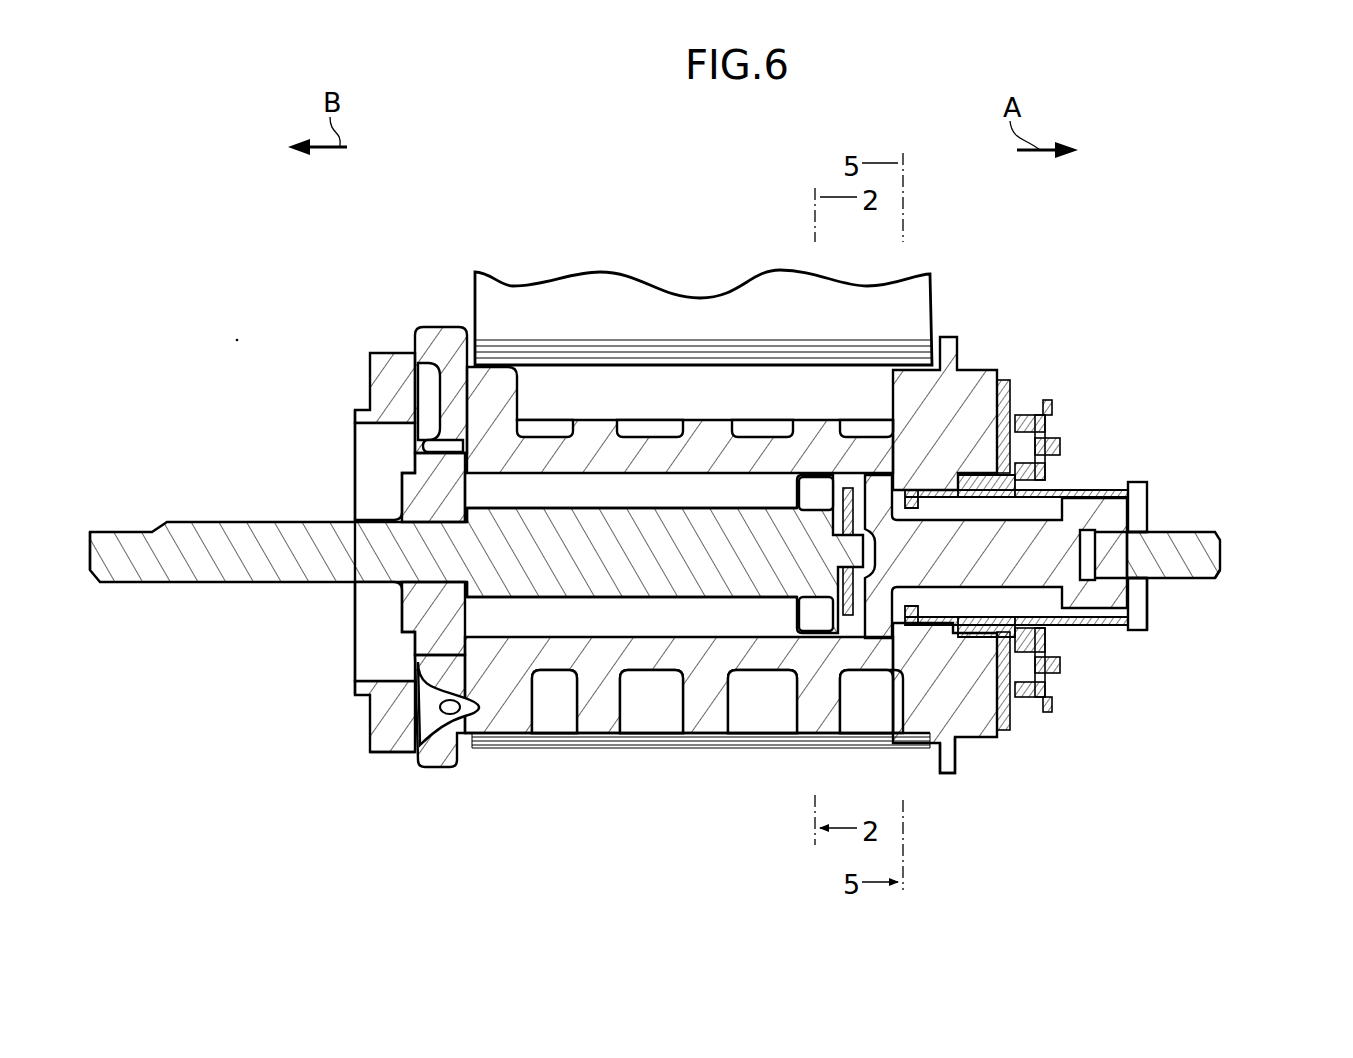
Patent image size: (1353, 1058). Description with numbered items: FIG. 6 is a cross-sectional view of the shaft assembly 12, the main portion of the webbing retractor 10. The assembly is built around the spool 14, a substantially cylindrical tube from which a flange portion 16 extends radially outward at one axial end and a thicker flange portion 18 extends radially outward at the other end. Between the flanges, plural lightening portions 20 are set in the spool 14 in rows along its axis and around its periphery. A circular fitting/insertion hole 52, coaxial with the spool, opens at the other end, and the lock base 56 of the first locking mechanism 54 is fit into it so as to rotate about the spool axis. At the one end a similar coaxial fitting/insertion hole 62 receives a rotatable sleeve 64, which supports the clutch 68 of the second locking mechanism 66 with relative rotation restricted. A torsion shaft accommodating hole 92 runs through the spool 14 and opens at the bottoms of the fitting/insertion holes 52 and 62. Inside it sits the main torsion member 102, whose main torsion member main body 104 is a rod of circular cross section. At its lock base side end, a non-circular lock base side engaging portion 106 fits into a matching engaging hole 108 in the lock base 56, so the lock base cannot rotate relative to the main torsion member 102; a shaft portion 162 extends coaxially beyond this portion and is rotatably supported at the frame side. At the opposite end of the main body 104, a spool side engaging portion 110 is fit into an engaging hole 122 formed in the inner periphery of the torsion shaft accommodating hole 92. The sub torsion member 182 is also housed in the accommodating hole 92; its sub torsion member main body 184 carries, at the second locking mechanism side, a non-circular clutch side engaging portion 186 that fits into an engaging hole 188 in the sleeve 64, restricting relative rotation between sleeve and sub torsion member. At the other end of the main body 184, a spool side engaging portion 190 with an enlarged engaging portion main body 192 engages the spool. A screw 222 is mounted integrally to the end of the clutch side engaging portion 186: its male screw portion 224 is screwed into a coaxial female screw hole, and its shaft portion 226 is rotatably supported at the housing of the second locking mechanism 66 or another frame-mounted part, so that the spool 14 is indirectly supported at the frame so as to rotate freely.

The webbing retractor 10 is at (703, 539).
The shaft assembly 12 is at (1138, 255).
The spool 14 is at (498, 722).
The flange portion 16 is at (955, 765).
The flange portion 18 is at (360, 737).
The lightening portions 20 is at (890, 802).
The fitting/insertion hole 52 is at (418, 487).
The first locking mechanism 54 is at (336, 523).
The lock base 56 is at (366, 373).
The fitting/insertion hole 62 is at (997, 605).
The sleeve 64 is at (1113, 492).
The second locking mechanism 66 is at (1083, 512).
The clutch 68 is at (1033, 412).
The torsion shaft accommodating hole 92 is at (494, 481).
The main torsion member 102 is at (476, 528).
The main torsion member main body 104 is at (597, 600).
The lock base side engaging portion 106 is at (462, 611).
The engaging hole 108 is at (430, 605).
The spool side engaging portion 110 is at (794, 613).
The engaging hole 122 is at (814, 487).
The shaft portion 162 is at (170, 585).
The sub torsion member 182 is at (923, 598).
The sub torsion member main body 184 is at (1005, 724).
The clutch side engaging portion 186 is at (1105, 603).
The engaging hole 188 is at (1153, 530).
The spool side engaging portion 190 is at (871, 644).
The engaging portion main body 192 is at (851, 488).
The screw 222 is at (1198, 565).
The male screw portion 224 is at (1140, 603).
The shaft portion 226 is at (1214, 578).